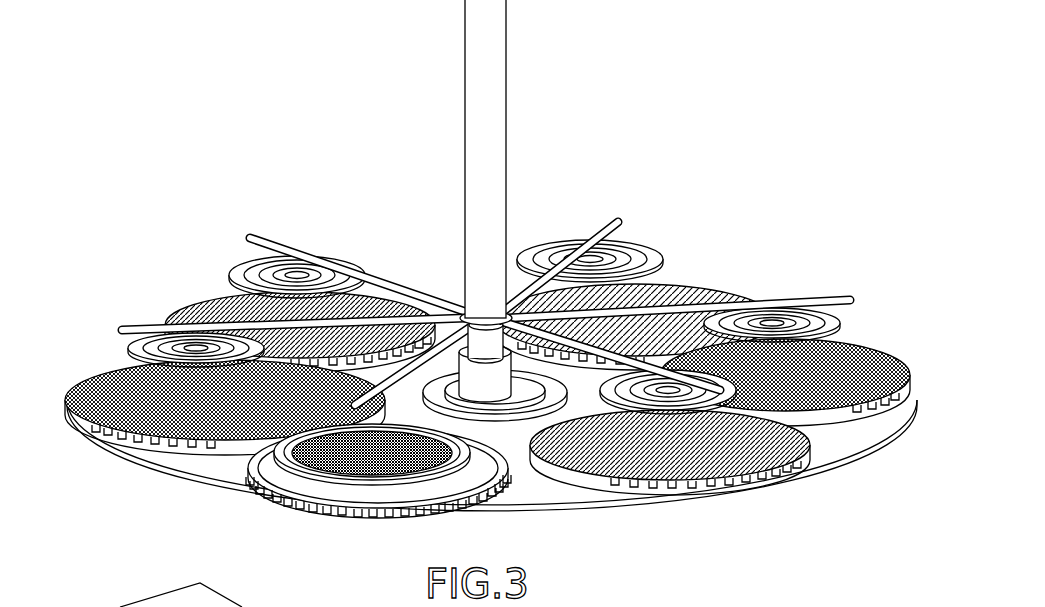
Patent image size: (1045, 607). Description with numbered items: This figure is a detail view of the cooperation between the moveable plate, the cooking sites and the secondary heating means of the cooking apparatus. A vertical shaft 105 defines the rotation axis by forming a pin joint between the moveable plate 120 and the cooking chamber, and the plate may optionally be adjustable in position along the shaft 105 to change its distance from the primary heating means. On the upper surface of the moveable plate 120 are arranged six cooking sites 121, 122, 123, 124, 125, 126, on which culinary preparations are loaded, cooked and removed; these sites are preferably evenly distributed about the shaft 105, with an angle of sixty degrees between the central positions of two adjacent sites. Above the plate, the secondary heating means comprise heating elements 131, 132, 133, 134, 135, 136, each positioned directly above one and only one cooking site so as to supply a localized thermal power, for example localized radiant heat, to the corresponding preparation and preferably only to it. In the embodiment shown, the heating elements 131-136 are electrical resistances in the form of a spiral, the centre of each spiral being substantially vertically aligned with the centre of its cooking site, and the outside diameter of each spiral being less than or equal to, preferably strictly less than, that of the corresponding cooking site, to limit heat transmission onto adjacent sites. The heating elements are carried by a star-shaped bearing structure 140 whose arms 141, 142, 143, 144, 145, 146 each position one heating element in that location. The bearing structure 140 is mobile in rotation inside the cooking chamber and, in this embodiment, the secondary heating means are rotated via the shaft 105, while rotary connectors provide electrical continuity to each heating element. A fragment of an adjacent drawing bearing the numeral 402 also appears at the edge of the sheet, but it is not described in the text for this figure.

The shaft 105 is at (506, 53).
The moveable plate 120 is at (210, 462).
The cooking site 121 is at (503, 470).
The cooking site 122 is at (632, 490).
The cooking site 123 is at (868, 412).
The cooking site 124 is at (712, 298).
The cooking site 125 is at (190, 302).
The cooking site 126 is at (110, 442).
The heating element 131 is at (332, 406).
The heating element 132 is at (711, 408).
The heating element 133 is at (841, 328).
The heating element 134 is at (662, 268).
The heating element 135 is at (362, 262).
The heating element 136 is at (130, 350).
The bearing structure 140 is at (544, 222).
The arm 141 is at (405, 392).
The arm 142 is at (700, 386).
The arm 143 is at (834, 294).
The arm 144 is at (626, 220).
The arm 145 is at (266, 243).
The arm 146 is at (131, 329).
The element of adjacent figure 402 is at (268, 596).